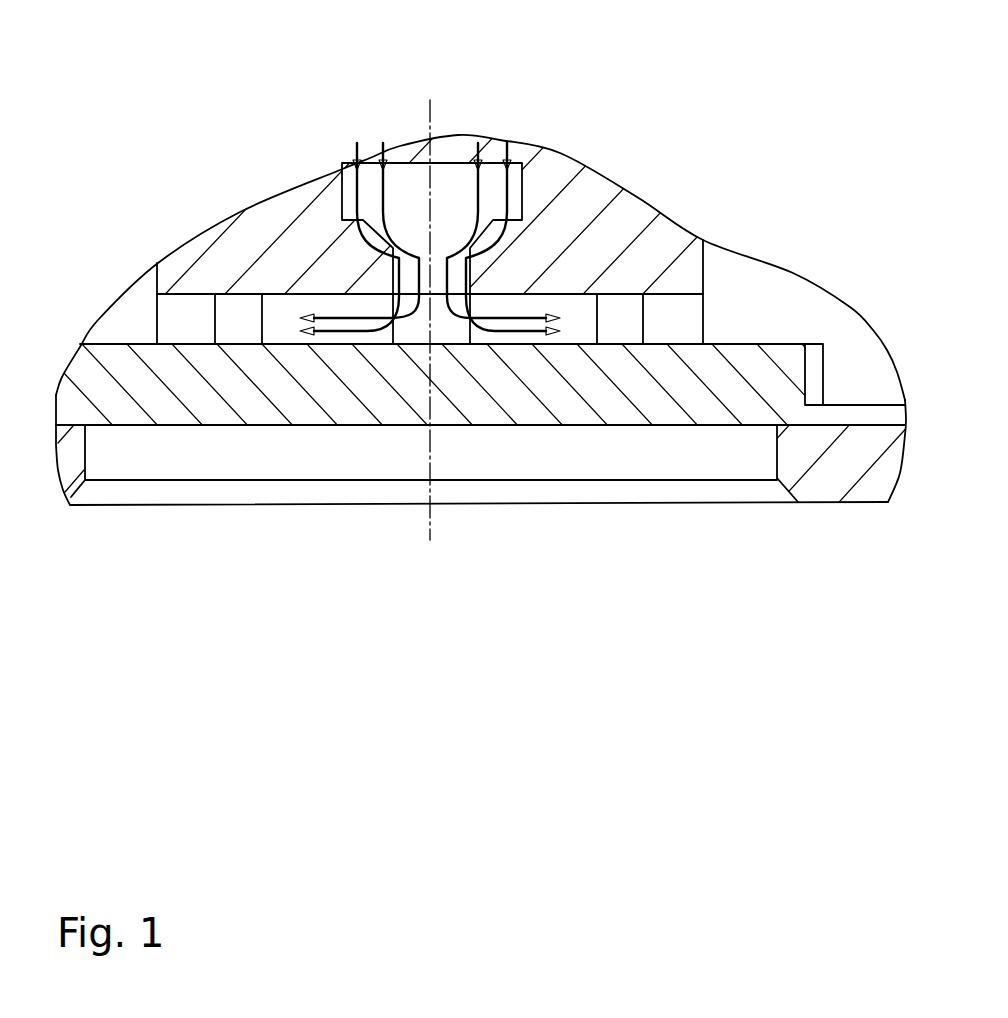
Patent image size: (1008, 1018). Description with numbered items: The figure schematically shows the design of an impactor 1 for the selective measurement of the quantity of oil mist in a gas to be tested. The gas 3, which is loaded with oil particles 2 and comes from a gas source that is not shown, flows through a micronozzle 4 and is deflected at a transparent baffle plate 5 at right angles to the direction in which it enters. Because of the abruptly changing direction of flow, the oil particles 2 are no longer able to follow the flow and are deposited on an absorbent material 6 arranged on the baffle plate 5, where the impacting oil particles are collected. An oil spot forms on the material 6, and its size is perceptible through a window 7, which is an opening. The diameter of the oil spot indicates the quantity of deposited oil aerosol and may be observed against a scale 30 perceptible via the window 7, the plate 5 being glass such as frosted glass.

The impactor 1 is at (228, 147).
The oil particles 2 is at (477, 188).
The gas 3 is at (383, 183).
The micronozzle 4 is at (468, 272).
The baffle plate 5 is at (695, 385).
The absorbent material 6 is at (303, 346).
The window 7 is at (460, 453).
The scale 30 is at (513, 425).